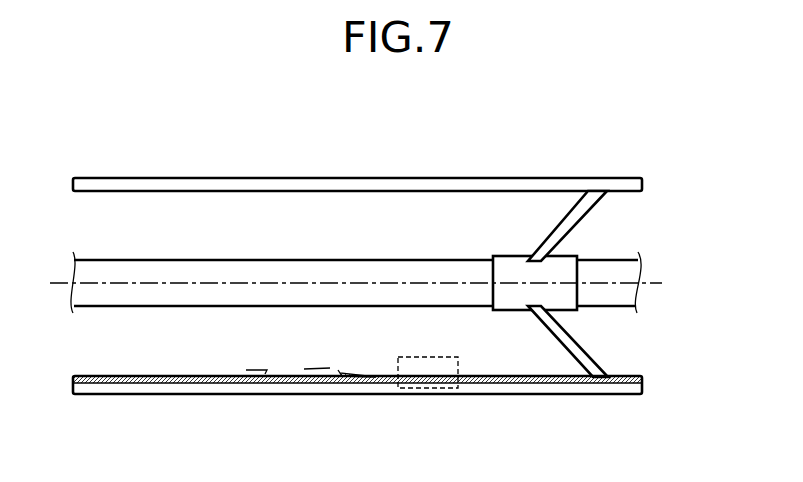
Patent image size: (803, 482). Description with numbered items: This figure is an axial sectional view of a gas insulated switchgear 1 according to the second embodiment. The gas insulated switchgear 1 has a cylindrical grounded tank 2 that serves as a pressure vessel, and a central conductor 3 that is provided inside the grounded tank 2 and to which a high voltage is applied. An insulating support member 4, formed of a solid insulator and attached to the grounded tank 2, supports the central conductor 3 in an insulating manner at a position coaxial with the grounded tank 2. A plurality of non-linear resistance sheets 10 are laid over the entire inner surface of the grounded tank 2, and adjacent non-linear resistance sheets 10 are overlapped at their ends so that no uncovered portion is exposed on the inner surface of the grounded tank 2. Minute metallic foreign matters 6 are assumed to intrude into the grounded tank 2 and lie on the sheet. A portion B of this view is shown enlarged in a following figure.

The gas insulated switchgear 1 is at (415, 178).
The grounded tank 2 is at (557, 178).
The central conductor 3 is at (615, 259).
The insulating support member 4 is at (572, 345).
The metallic foreign matters 6 is at (259, 371).
The non-linear resistance sheet 10 is at (173, 394).
The portion B is at (452, 391).